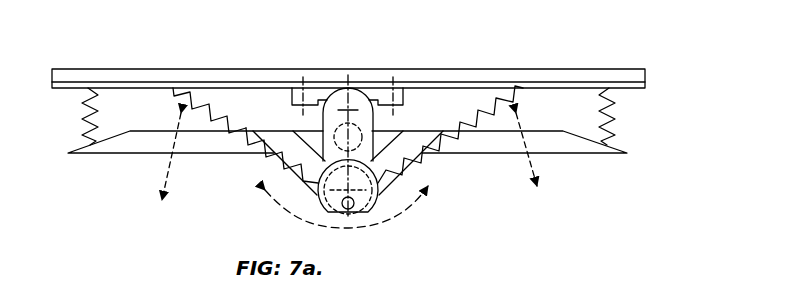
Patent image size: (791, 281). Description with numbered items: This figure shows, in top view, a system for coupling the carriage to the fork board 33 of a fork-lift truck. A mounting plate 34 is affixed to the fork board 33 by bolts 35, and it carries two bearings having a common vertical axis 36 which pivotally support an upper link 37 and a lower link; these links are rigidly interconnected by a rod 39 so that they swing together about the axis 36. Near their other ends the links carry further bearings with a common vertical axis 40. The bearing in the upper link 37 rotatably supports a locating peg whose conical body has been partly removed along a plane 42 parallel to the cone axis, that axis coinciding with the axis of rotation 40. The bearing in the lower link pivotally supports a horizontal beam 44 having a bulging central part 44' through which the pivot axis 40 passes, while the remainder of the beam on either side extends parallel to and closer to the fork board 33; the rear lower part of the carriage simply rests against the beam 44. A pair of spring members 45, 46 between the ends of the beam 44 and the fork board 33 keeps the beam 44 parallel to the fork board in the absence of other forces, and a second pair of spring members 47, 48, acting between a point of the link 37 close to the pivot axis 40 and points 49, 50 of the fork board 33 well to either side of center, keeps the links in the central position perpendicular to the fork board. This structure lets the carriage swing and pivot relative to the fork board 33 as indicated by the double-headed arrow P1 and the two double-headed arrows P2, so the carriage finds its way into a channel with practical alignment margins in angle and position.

The fork board 33 is at (567, 75).
The mounting plate 34 is at (403, 100).
The bolts 35 is at (393, 87).
The vertical axis 36 is at (357, 100).
The upper link 37 is at (323, 130).
The rod 39 is at (333, 92).
The vertical axis 40 is at (324, 203).
The plane 42 is at (372, 213).
The horizontal beam 44 is at (195, 165).
The bulging central part 44' is at (499, 173).
The spring member 45 is at (78, 116).
The spring member 46 is at (616, 112).
The spring member 47 is at (242, 140).
The spring member 48 is at (448, 150).
The point of the fork board 49 is at (173, 92).
The point of the fork board 50 is at (521, 93).
The double-headed arrow P1 is at (380, 228).
The double-headed arrows P2 is at (163, 162).